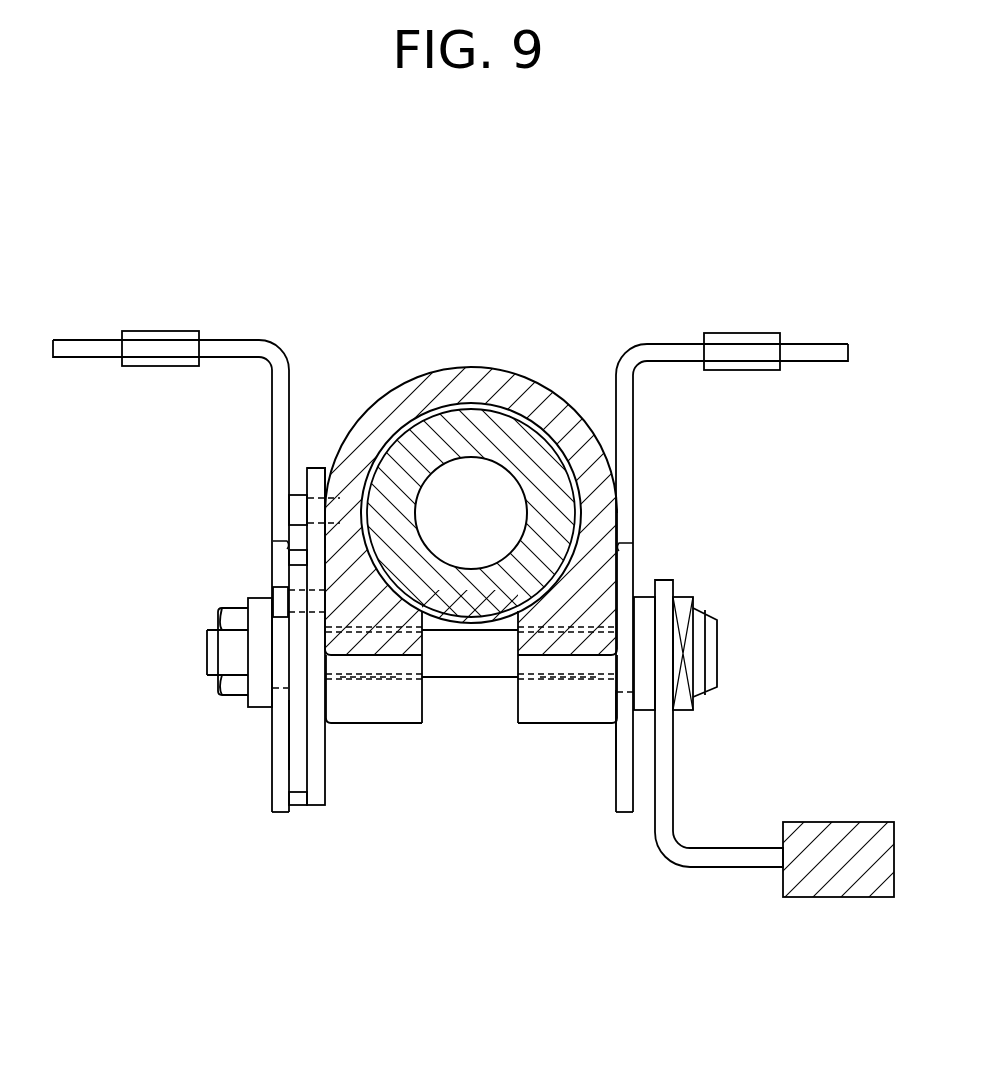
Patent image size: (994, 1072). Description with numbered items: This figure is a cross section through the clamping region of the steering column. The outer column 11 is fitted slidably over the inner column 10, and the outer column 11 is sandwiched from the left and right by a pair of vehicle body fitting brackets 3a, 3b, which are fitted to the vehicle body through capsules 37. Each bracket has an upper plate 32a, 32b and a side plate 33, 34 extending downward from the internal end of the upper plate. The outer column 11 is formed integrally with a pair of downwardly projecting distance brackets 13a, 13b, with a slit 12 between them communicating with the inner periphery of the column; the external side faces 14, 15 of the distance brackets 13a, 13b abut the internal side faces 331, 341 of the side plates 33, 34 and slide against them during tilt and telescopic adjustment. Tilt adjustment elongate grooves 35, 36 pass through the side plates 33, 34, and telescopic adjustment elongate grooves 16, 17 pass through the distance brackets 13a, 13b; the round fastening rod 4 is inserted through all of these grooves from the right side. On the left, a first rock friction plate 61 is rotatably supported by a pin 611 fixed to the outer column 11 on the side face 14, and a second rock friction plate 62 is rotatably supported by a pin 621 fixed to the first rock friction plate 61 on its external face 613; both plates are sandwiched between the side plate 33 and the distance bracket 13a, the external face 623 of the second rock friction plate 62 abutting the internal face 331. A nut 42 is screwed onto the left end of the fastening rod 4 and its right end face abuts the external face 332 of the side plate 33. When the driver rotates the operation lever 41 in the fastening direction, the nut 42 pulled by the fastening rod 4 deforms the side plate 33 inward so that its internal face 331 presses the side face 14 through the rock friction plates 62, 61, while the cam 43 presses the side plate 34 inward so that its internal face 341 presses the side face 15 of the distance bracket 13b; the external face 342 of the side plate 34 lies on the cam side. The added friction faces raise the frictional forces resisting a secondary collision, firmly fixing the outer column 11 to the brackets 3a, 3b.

The vehicle body fitting bracket 3a is at (264, 315).
The vehicle body fitting bracket 3b is at (790, 297).
The fastening rod 4 is at (490, 665).
The inner column 10 is at (480, 422).
The outer column 11 is at (535, 406).
The slit 12 is at (422, 708).
The distance bracket 13a is at (407, 705).
The distance bracket 13b is at (533, 705).
The side face 14 is at (315, 710).
The side face 15 is at (620, 708).
The telescopic adjustment elongate groove 16 is at (370, 665).
The telescopic adjustment elongate groove 17 is at (569, 665).
The upper plate 32a is at (232, 346).
The upper plate 32b is at (672, 345).
The side plate 33 is at (273, 382).
The internal side face 331 is at (289, 415).
The external face 332 is at (272, 447).
The side plate 34 is at (624, 398).
The internal side face 341 is at (612, 437).
The external face 342 is at (634, 473).
The tilt adjustment elongate groove 35 is at (273, 548).
The tilt adjustment elongate groove 36 is at (637, 550).
The capsule 37 is at (148, 331).
The operation lever 41 is at (833, 837).
The nut 42 is at (233, 648).
The cam 43 is at (645, 632).
The first rock friction plate 61 is at (317, 482).
The pin 611 is at (298, 507).
The external face 613 is at (307, 777).
The second rock friction plate 62 is at (300, 567).
The pin 621 is at (273, 590).
The external face 623 is at (288, 730).